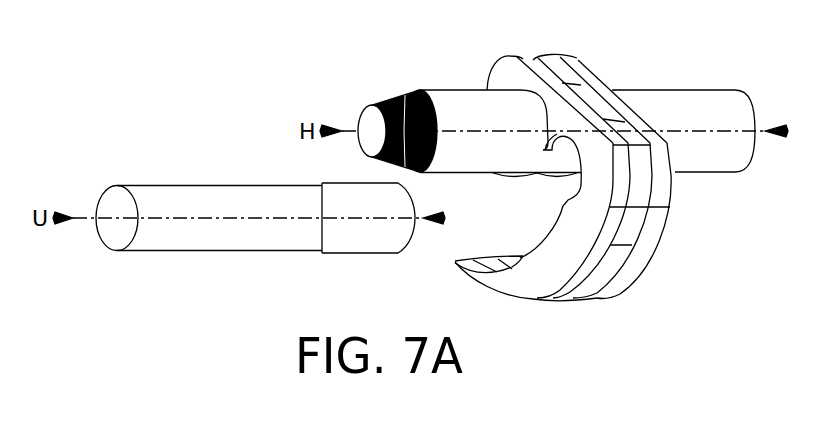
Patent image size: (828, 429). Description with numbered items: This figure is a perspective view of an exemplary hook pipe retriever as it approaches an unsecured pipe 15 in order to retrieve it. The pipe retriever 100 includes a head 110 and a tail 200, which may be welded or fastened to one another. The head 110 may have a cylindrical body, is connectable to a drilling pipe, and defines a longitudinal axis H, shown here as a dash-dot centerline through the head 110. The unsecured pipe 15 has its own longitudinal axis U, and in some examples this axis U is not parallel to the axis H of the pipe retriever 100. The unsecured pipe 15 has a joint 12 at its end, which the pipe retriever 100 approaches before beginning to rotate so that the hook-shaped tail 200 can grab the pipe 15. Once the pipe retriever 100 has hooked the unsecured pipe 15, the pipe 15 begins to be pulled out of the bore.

The unsecured pipe 15 is at (233, 185).
The joint 12 is at (352, 254).
The pipe retriever 100 is at (438, 65).
The head 110 is at (707, 90).
The tail 200 is at (643, 257).